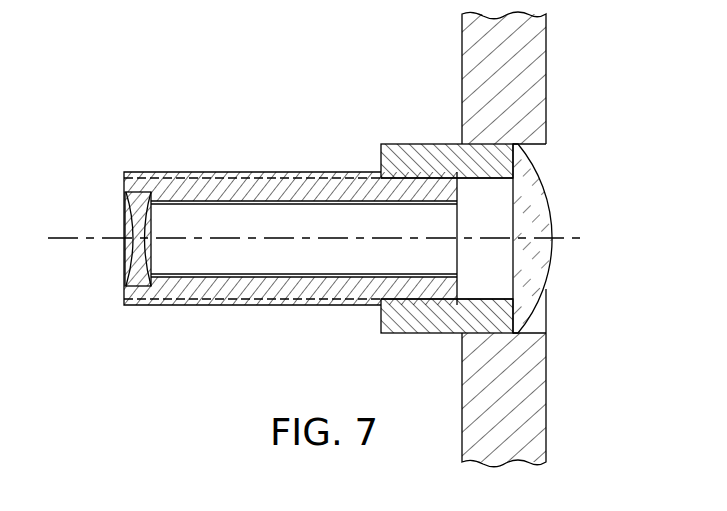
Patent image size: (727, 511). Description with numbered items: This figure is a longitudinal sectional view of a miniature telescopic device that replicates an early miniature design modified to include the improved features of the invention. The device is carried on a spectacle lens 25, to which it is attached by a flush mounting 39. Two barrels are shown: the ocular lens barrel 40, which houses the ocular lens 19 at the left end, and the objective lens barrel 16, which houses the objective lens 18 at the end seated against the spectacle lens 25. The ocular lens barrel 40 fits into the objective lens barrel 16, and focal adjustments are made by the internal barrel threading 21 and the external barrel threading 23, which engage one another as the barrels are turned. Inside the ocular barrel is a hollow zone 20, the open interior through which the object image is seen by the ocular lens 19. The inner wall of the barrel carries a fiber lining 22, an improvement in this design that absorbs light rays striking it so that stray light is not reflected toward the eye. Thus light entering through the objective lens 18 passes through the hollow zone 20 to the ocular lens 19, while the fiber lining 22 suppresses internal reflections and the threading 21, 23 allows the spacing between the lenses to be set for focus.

The objective lens barrel 16 is at (427, 323).
The objective lens 18 is at (551, 206).
The ocular lens 19 is at (125, 269).
The hollow zone of the ocular barrel 20 is at (165, 216).
The internal barrel threading 21 is at (417, 167).
The inner wall fiber lining 22 is at (180, 275).
The external barrel threading 23 is at (318, 231).
The spectacle lens 25 is at (546, 400).
The flush mounting 39 is at (546, 289).
The ocular lens barrel 40 is at (251, 290).